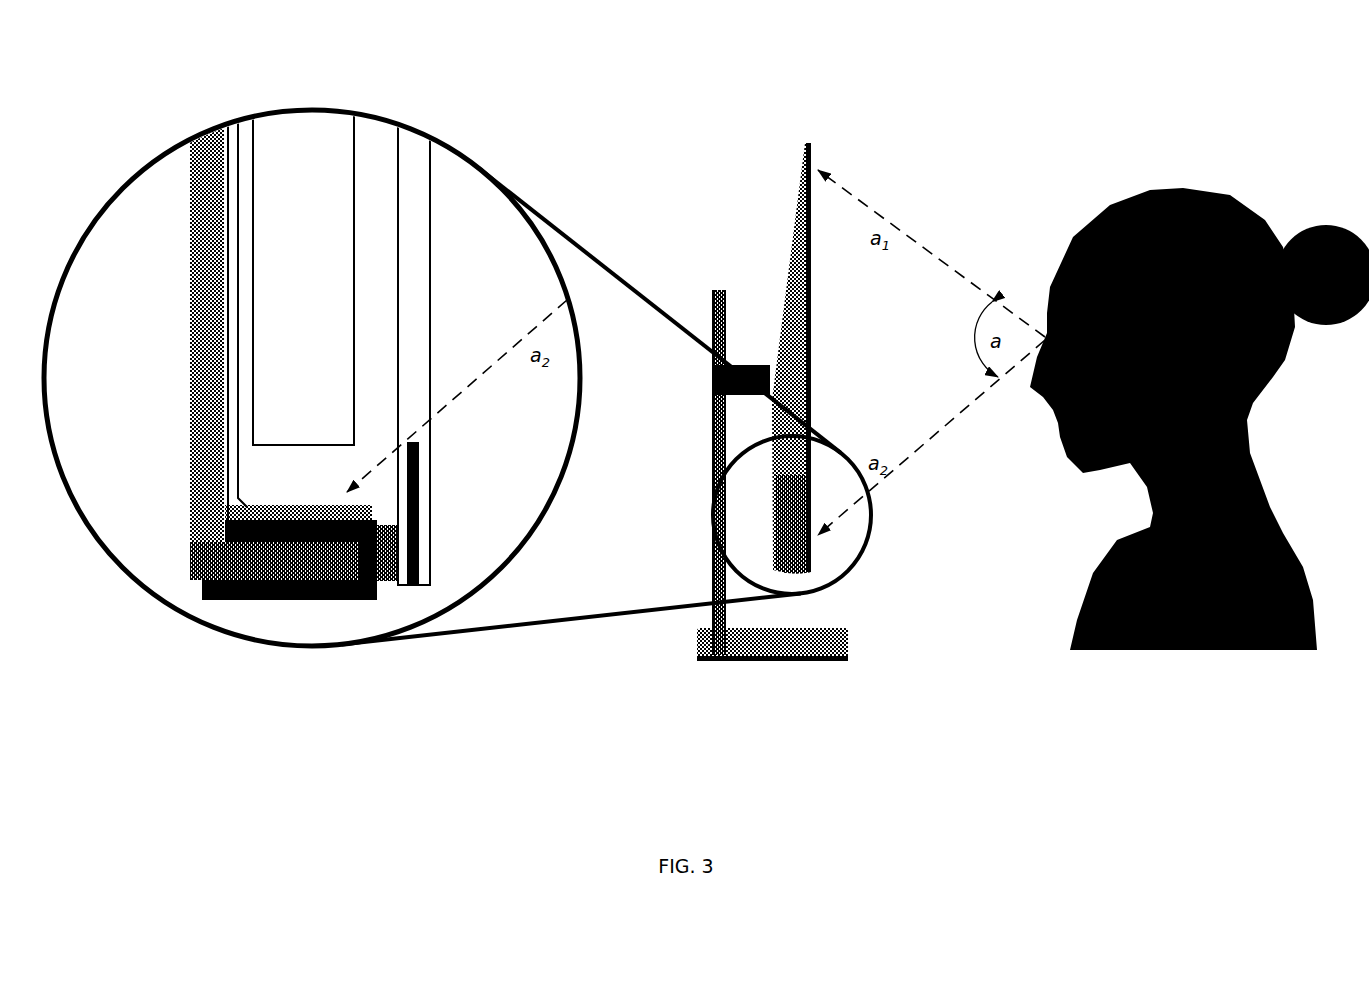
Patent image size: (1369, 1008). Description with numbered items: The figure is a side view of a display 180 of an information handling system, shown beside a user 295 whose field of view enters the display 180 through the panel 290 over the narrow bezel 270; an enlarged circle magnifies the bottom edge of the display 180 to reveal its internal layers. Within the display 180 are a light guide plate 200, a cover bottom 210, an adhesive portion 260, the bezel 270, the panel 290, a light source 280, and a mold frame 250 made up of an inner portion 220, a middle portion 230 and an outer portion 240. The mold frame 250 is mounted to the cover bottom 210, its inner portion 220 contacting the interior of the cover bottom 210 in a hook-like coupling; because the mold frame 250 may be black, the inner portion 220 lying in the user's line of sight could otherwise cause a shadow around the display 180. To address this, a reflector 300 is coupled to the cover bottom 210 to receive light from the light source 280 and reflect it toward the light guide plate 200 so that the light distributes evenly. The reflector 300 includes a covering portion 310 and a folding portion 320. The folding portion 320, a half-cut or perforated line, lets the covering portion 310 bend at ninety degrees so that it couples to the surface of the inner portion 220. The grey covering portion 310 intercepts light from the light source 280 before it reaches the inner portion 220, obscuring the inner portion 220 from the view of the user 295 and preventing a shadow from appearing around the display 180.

The display 180 is at (835, 133).
The light guide plate 200 is at (298, 145).
The cover bottom 210 is at (187, 298).
The inner portion 220 is at (217, 530).
The middle portion 230 is at (345, 563).
The outer portion 240 is at (197, 590).
The mold frame 250 is at (262, 614).
The adhesive portion 260 is at (388, 578).
The bezel 270 is at (425, 485).
The light source 280 is at (278, 482).
The panel 290 is at (435, 258).
The user 295 is at (1257, 186).
The reflector 300 is at (230, 175).
The covering portion 310 is at (262, 507).
The folding portion 320 is at (217, 506).